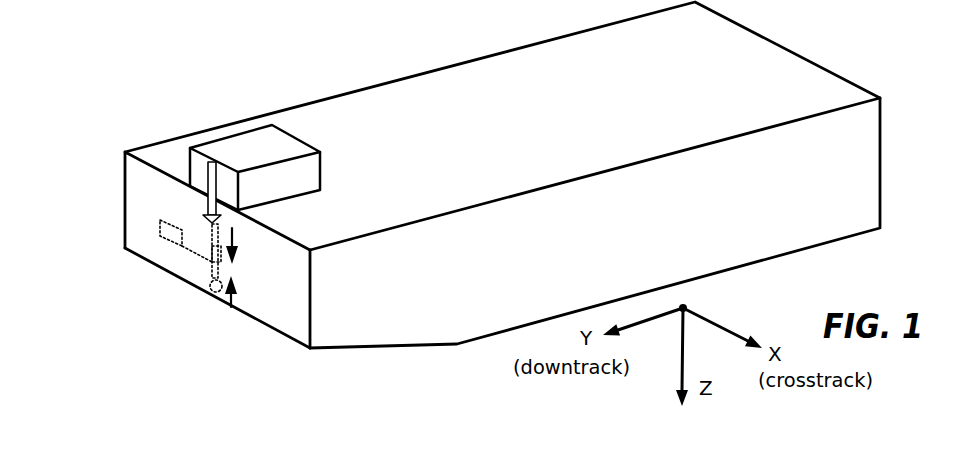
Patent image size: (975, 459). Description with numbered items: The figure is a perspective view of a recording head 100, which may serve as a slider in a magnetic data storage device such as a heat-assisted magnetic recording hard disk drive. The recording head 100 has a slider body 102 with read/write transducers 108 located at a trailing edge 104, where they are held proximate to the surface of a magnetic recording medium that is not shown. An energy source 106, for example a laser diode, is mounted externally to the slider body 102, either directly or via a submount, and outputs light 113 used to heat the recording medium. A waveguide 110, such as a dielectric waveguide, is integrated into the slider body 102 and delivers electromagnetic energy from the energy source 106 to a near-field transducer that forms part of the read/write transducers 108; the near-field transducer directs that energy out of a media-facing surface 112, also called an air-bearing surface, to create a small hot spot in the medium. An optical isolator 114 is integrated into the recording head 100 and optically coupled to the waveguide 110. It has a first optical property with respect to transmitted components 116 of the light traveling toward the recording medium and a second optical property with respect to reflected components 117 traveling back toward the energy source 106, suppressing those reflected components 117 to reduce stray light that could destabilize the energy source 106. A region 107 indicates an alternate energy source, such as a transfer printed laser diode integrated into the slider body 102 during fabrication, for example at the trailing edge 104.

The recording head 100 is at (527, 175).
The slider body 102 is at (445, 79).
The trailing edge 104 is at (125, 227).
The energy source 106 is at (238, 143).
The region 107 is at (160, 240).
The read/write transducers 108 is at (207, 322).
The waveguide 110 is at (213, 227).
The media-facing surface 112 is at (295, 345).
The light 113 is at (193, 195).
The optical isolator 114 is at (210, 284).
The transmitted components 116 is at (243, 252).
The reflected components 117 is at (231, 307).